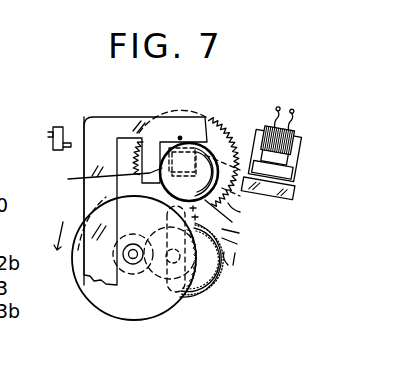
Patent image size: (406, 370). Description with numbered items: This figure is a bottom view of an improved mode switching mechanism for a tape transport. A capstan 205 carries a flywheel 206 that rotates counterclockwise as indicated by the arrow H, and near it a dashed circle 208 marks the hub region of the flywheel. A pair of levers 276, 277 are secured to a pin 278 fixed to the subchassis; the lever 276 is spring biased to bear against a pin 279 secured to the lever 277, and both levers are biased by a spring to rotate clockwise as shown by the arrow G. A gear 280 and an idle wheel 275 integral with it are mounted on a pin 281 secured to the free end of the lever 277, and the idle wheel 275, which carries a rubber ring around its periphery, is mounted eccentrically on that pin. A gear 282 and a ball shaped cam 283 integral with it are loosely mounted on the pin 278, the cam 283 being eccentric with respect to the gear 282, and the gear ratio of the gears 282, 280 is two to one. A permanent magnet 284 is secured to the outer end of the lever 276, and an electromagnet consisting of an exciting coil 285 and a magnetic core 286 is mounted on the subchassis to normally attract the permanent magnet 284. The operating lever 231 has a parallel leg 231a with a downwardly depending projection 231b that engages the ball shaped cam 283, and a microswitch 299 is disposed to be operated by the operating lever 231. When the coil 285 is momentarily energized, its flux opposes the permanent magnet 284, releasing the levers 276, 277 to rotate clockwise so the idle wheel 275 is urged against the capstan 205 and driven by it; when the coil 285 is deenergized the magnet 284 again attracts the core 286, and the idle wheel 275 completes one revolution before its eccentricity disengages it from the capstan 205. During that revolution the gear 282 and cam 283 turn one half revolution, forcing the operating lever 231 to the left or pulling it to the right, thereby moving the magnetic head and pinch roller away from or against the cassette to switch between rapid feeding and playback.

The capstan 205 is at (123, 256).
The flywheel 206 is at (98, 306).
The cam 208 is at (130, 273).
The operating lever 231 is at (84, 198).
The parallel leg 231a is at (132, 138).
The downwardly depending projection 231b is at (116, 201).
The idle wheel 275 is at (210, 280).
The lever 276 is at (292, 202).
The lever 277 is at (253, 258).
The pin 278 is at (250, 236).
The pin 279 is at (222, 142).
The gear 280 is at (213, 284).
The pin 281 is at (167, 300).
The gear 282 is at (212, 128).
The ball shaped cam 283 is at (252, 214).
The permanent magnet 284 is at (306, 184).
The exciting coil 285 is at (293, 126).
The magnetic core 286 is at (303, 147).
The microswitch 299 is at (57, 127).
The arrow G is at (179, 136).
The arrow H is at (58, 236).